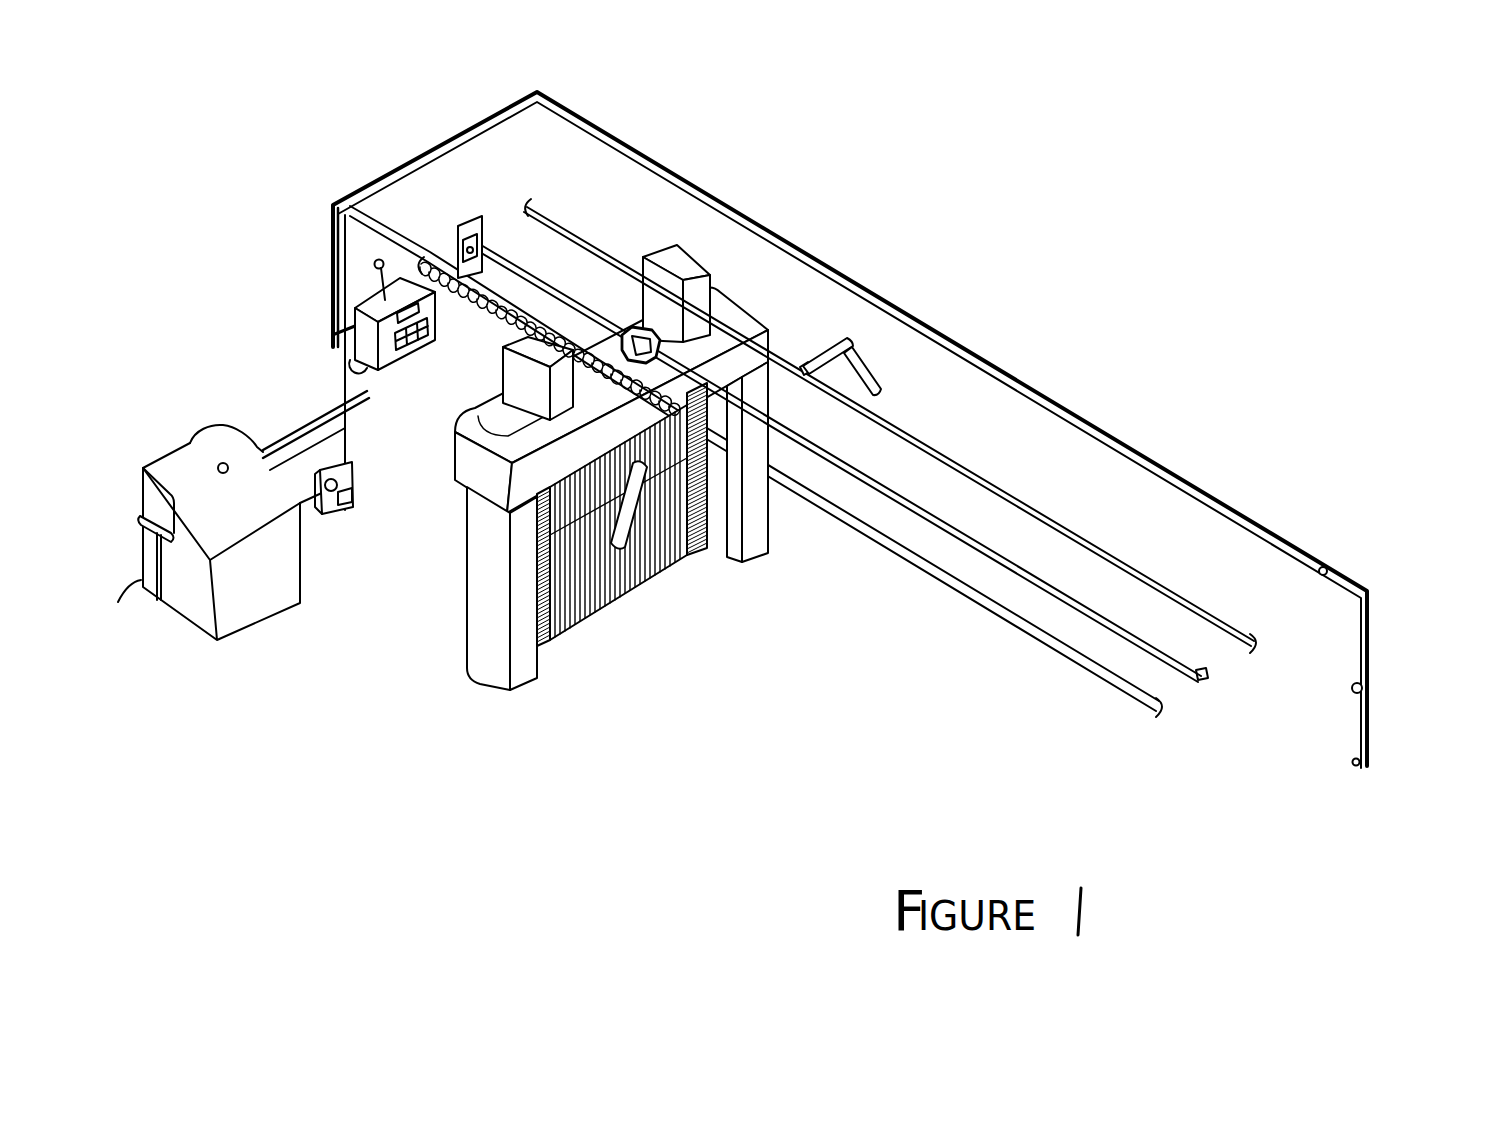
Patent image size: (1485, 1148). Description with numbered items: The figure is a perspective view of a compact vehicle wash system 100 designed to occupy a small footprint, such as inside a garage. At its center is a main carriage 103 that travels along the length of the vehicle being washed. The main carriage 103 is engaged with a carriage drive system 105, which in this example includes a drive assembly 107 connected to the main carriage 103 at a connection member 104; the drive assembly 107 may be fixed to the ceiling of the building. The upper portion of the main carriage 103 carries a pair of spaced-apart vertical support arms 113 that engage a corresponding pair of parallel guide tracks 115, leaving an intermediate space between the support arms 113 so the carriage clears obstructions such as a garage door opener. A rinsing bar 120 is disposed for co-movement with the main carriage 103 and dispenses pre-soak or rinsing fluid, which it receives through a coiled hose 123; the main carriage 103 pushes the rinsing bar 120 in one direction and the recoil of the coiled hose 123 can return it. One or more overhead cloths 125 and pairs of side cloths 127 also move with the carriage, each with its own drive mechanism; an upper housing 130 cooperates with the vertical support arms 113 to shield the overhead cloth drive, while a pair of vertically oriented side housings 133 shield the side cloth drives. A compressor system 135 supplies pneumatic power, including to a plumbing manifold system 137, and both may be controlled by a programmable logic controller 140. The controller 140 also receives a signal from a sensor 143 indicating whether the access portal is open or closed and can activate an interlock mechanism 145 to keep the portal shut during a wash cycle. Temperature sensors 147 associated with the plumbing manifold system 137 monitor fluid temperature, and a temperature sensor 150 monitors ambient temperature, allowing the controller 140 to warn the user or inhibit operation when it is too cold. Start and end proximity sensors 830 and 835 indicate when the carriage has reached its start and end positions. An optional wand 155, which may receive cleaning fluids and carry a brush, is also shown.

The vehicle wash system 100 is at (1078, 233).
The main carriage 103 is at (470, 575).
The connection member 104 is at (632, 328).
The carriage drive system 105 is at (483, 206).
The drive assembly 107 is at (548, 290).
The vertical support arms 113 is at (690, 268).
The guide tracks 115 is at (1040, 512).
The rinsing bar 120 is at (880, 387).
The coiled hose 123 is at (493, 322).
The overhead cloths 125 is at (613, 590).
The side cloths 127 is at (703, 562).
The upper housing 130 is at (592, 456).
The side housings 133 is at (752, 532).
The compressor system 135 is at (353, 508).
The plumbing manifold system 137 is at (287, 593).
The programmable logic controller 140 is at (363, 332).
The sensor 143 is at (1366, 686).
The interlock mechanism 145 is at (1355, 768).
The temperature sensors 147 is at (218, 466).
The temperature sensor 150 is at (375, 262).
The wand 155 is at (150, 592).
The start proximity sensor 830 is at (652, 176).
The end proximity sensor 835 is at (1323, 567).